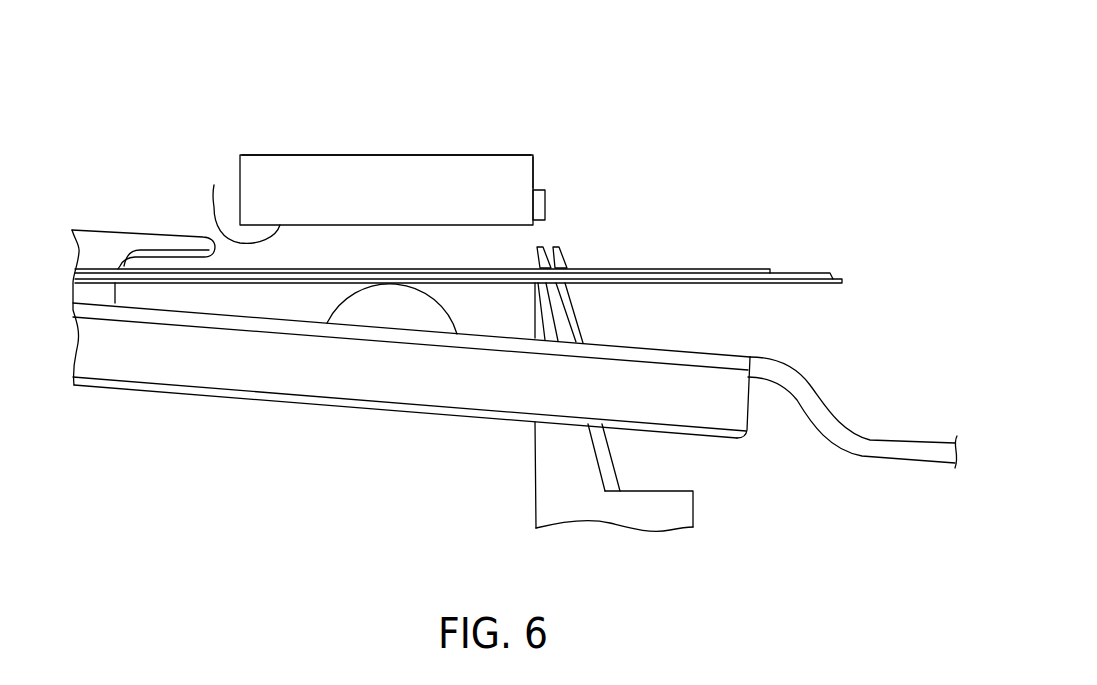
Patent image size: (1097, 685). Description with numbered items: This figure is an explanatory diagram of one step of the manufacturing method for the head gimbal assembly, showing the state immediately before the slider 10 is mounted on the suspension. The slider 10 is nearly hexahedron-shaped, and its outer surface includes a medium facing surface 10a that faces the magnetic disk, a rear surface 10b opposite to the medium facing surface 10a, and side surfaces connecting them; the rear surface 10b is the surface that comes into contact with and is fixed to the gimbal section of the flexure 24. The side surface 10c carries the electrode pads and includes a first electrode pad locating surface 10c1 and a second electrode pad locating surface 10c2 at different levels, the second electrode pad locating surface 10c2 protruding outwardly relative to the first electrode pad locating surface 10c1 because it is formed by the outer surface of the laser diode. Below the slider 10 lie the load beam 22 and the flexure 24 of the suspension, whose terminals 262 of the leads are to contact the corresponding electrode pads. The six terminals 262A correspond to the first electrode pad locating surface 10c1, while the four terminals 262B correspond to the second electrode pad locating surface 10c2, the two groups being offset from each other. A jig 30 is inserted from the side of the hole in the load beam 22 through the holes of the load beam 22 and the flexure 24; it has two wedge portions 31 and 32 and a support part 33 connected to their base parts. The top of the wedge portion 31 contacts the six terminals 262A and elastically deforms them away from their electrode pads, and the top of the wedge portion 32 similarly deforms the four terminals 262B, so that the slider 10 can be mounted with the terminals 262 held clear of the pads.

The slider 10 is at (392, 156).
The medium facing surface 10a is at (302, 155).
The rear surface 10b is at (214, 185).
The side surface 10c is at (648, 67).
The first electrode pad locating surface 10c1 is at (533, 173).
The second electrode pad locating surface 10c2 is at (545, 205).
The terminals 262 is at (662, 220).
The six terminals 262A is at (538, 247).
The four terminals 262B is at (557, 247).
The flexure 24 is at (811, 273).
The load beam 22 is at (470, 418).
The jig 30 is at (651, 454).
The wedge portion 31 is at (553, 312).
The wedge portion 32 is at (578, 328).
The support part 33 is at (653, 531).